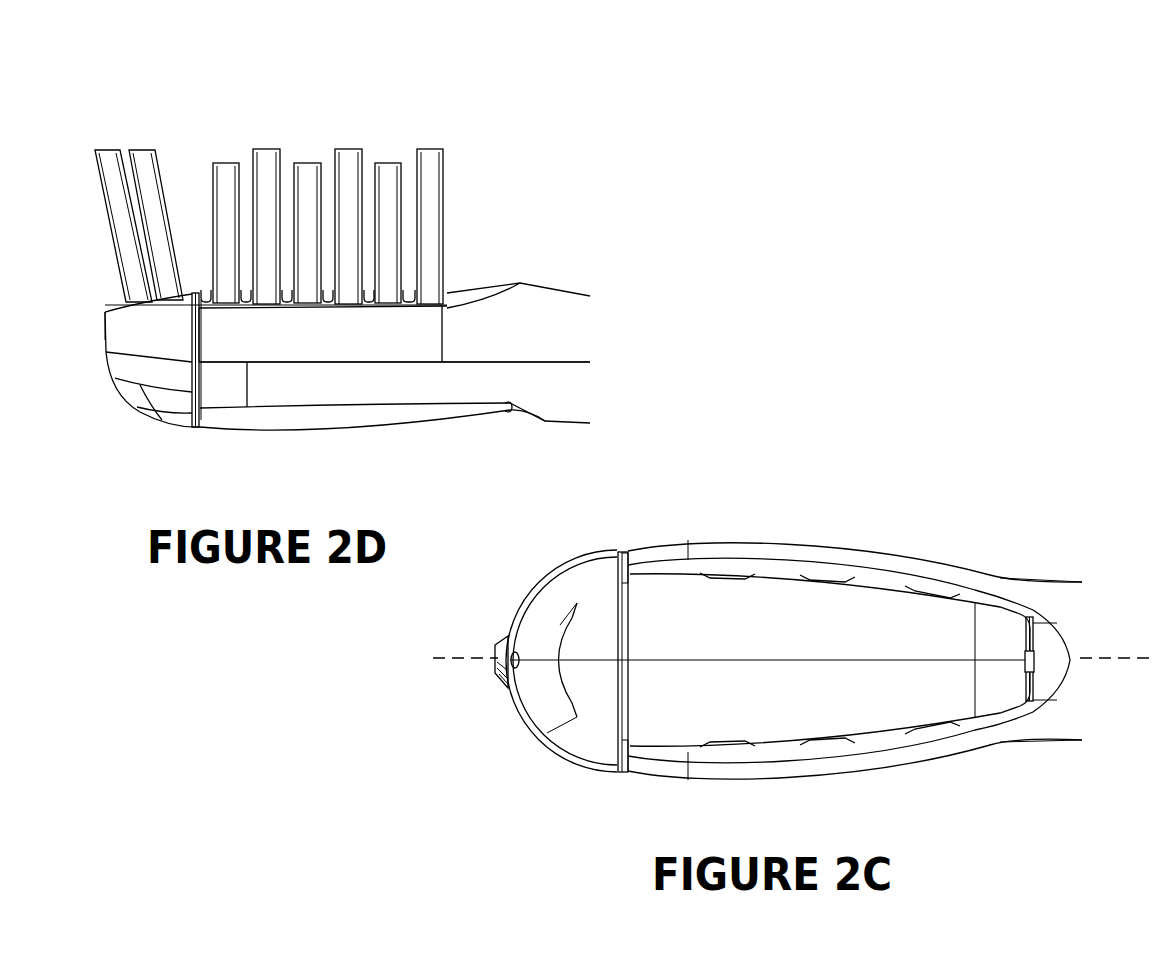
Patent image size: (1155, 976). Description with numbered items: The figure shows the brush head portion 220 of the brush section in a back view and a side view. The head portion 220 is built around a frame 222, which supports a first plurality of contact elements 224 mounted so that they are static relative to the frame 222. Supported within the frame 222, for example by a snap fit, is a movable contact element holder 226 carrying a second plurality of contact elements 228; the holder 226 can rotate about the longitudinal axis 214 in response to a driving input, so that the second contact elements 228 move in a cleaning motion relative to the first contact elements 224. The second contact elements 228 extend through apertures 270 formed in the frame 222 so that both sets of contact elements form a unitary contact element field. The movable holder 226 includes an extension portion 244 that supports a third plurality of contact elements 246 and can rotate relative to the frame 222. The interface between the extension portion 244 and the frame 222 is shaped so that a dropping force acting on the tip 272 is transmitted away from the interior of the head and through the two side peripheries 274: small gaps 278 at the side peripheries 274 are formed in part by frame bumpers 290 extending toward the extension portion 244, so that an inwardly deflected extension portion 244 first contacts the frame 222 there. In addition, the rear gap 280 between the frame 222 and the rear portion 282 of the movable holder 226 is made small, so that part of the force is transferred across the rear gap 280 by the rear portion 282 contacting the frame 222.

In FIG. 2C, the longitudinal axis 214 is at (1136, 657).
In FIG. 2D, the brush head portion 220 is at (470, 100).
In FIG. 2C, the brush head portion 220 is at (940, 465).
In FIG. 2D, the frame 222 is at (410, 372).
In FIG. 2C, the frame 222 is at (1003, 577).
In FIG. 2D, the first plurality of contact elements 224 is at (236, 168).
In FIG. 2D, the movable contact element holder 226 is at (300, 423).
In FIG. 2C, the movable contact element holder 226 is at (653, 603).
In FIG. 2D, the second plurality of contact elements 228 is at (266, 160).
In FIG. 2D, the extension portion 244 is at (155, 357).
In FIG. 2C, the extension portion 244 is at (577, 602).
In FIG. 2D, the third plurality of contact elements 246 is at (147, 170).
In FIG. 2C, the third plurality of contact elements 246 is at (500, 636).
In FIG. 2C, the apertures 270 is at (720, 573).
In FIG. 2D, the tip 272 is at (107, 327).
In FIG. 2C, the tip 272 is at (512, 670).
In FIG. 2D, the side peripheries 274 is at (335, 387).
In FIG. 2C, the side peripheries 274 is at (775, 541).
In FIG. 2D, the small gaps 278 is at (197, 300).
In FIG. 2C, the small gaps 278 is at (622, 550).
In FIG. 2C, the rear gap 280 is at (1030, 707).
In FIG. 2D, the rear portion 282 is at (505, 413).
In FIG. 2C, the rear portion 282 is at (1020, 672).
In FIG. 2D, the frame bumpers 290 is at (207, 313).